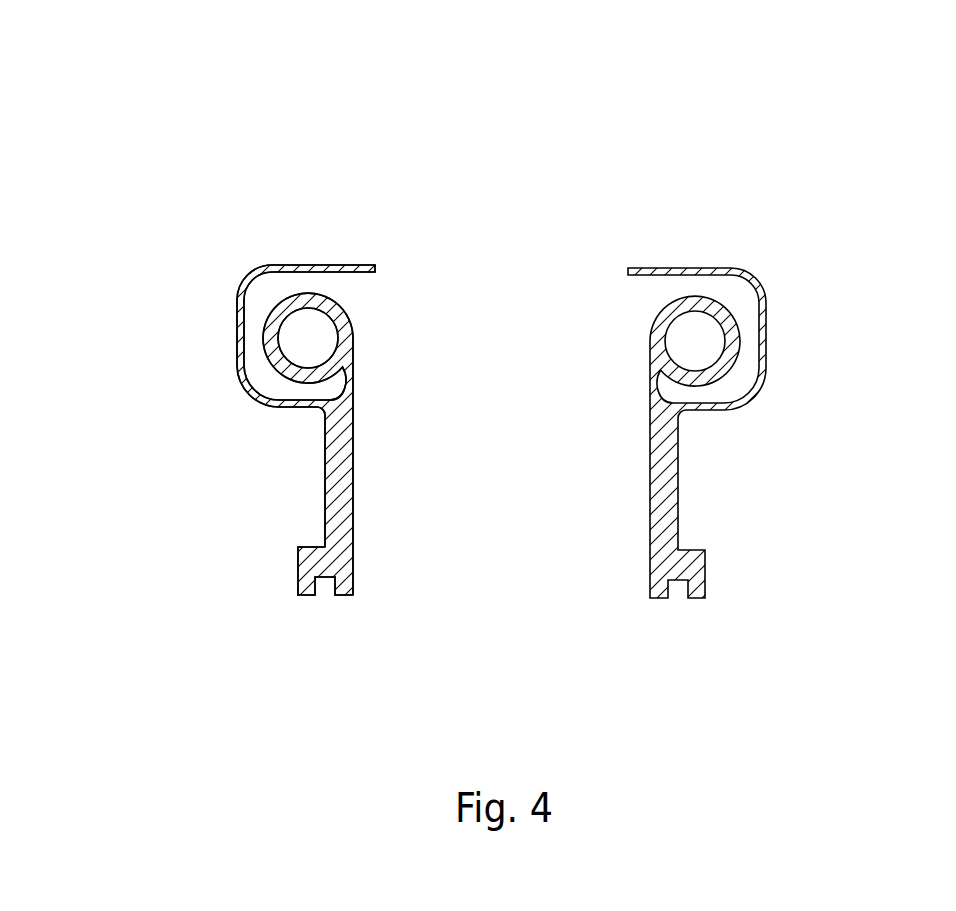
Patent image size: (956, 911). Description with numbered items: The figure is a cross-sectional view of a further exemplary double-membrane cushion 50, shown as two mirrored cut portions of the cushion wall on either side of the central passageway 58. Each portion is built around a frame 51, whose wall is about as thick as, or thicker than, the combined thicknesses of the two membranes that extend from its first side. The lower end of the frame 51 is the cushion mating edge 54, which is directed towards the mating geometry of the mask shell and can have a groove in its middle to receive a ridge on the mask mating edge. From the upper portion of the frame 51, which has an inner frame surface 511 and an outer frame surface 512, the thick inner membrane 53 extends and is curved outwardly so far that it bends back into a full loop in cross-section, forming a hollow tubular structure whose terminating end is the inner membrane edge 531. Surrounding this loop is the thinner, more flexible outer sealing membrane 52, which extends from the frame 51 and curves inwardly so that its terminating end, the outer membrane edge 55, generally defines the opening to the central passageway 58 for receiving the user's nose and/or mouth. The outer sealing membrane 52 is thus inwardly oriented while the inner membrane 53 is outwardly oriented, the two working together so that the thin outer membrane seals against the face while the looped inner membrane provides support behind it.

The double-membrane cushion 50 is at (758, 165).
The frame 51 is at (333, 508).
The inner frame surface 511 is at (358, 418).
The outer frame surface 512 is at (325, 423).
The outer sealing membrane 52 is at (236, 326).
The inner membrane 53 is at (352, 315).
The inner membrane edge 531 is at (332, 370).
The cushion mating edge 54 is at (293, 582).
The outer membrane edge 55 is at (375, 265).
The central passageway 58 is at (507, 520).